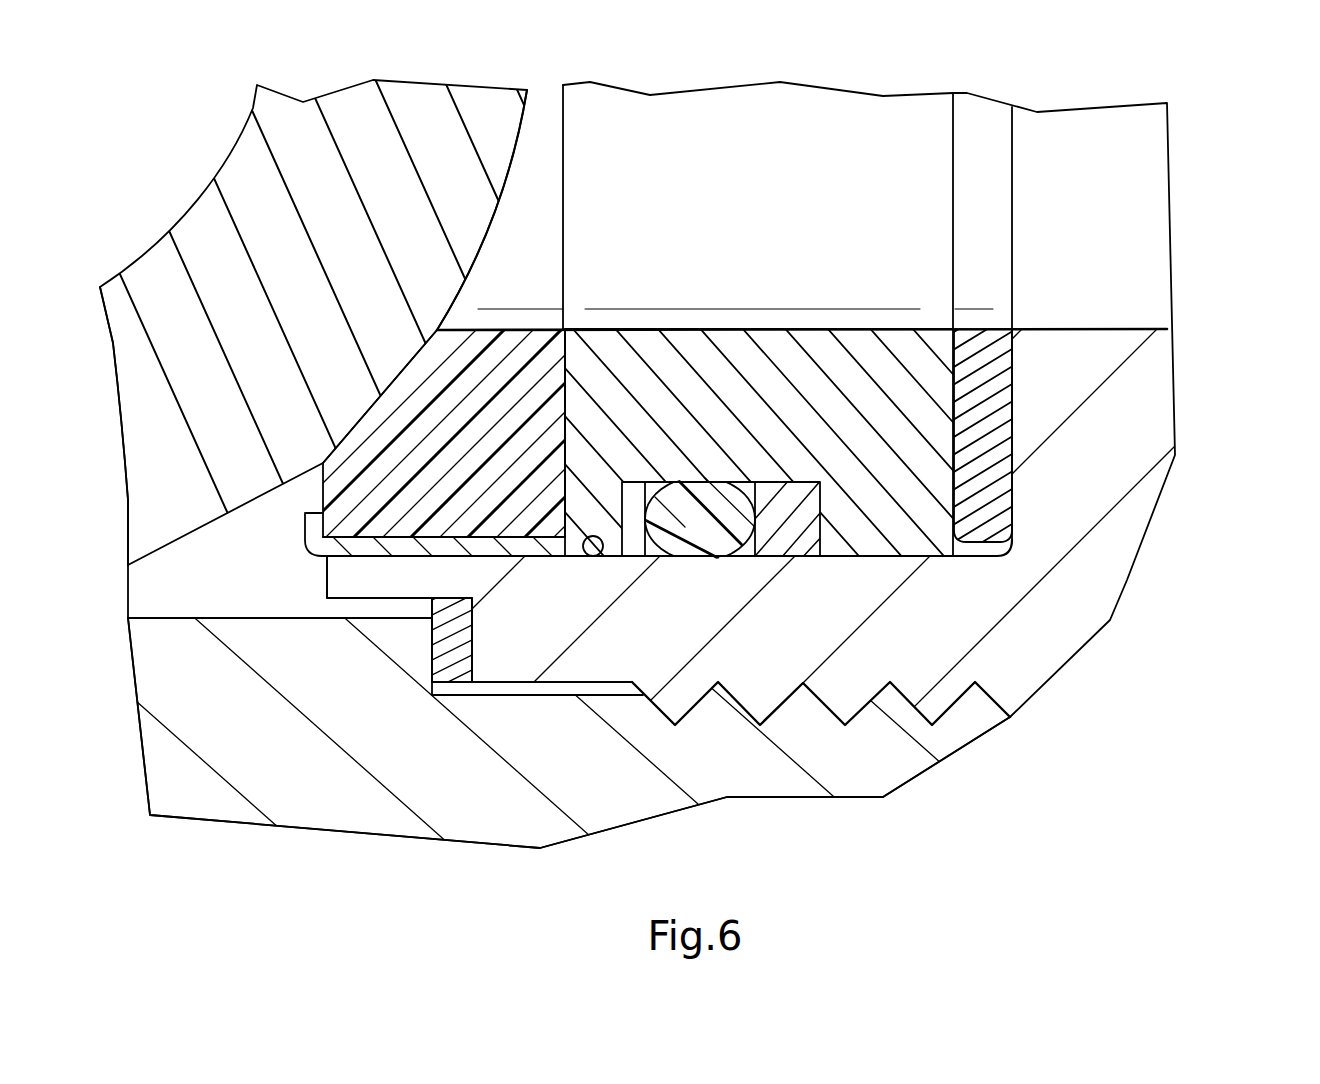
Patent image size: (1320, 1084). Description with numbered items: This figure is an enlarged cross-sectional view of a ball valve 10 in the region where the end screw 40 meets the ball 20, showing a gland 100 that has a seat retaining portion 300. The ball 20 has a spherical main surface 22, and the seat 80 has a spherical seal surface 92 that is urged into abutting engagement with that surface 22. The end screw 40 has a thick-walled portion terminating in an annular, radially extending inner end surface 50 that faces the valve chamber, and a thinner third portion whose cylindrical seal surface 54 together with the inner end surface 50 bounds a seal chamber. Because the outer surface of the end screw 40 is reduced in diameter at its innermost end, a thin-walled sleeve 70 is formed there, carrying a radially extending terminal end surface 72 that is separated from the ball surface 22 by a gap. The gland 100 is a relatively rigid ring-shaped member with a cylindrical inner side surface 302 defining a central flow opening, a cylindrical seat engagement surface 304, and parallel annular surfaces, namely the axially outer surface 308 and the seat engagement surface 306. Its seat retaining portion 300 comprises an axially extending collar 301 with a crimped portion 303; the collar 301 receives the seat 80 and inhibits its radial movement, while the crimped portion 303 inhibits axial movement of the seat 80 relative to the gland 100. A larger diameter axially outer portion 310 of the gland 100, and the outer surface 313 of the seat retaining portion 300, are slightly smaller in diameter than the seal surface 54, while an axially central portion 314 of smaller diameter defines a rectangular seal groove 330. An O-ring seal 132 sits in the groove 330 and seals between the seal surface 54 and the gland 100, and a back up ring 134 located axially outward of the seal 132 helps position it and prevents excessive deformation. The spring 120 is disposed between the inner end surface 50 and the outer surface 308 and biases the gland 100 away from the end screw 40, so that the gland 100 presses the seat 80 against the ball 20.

The valve 10 is at (1220, 171).
The ball 20 is at (380, 140).
The spherical main surface 22 is at (510, 173).
The end screw 40 is at (1073, 658).
The inner end surface 50 is at (1013, 457).
The seal surface 54 is at (604, 552).
The sleeve 70 is at (397, 573).
The terminal end surface 72 is at (327, 587).
The seat 80 is at (507, 467).
The seal surface 92 is at (377, 407).
The gland 100 is at (890, 517).
The spring 120 is at (990, 427).
The seal 132 is at (695, 520).
The back up ring 134 is at (777, 527).
The seat retaining portion 300 is at (307, 557).
The collar 301 is at (483, 545).
The inner side surface 302 is at (877, 325).
The crimped portion 303 is at (303, 535).
The seat engagement surface 304 is at (440, 537).
The seat engagement surface 306 is at (565, 375).
The axially outer surface 308 is at (953, 371).
The axially outer portion 310 is at (863, 553).
The outer surface 313 is at (358, 557).
The axially central portion 314 is at (637, 483).
The seal groove 330 is at (633, 528).